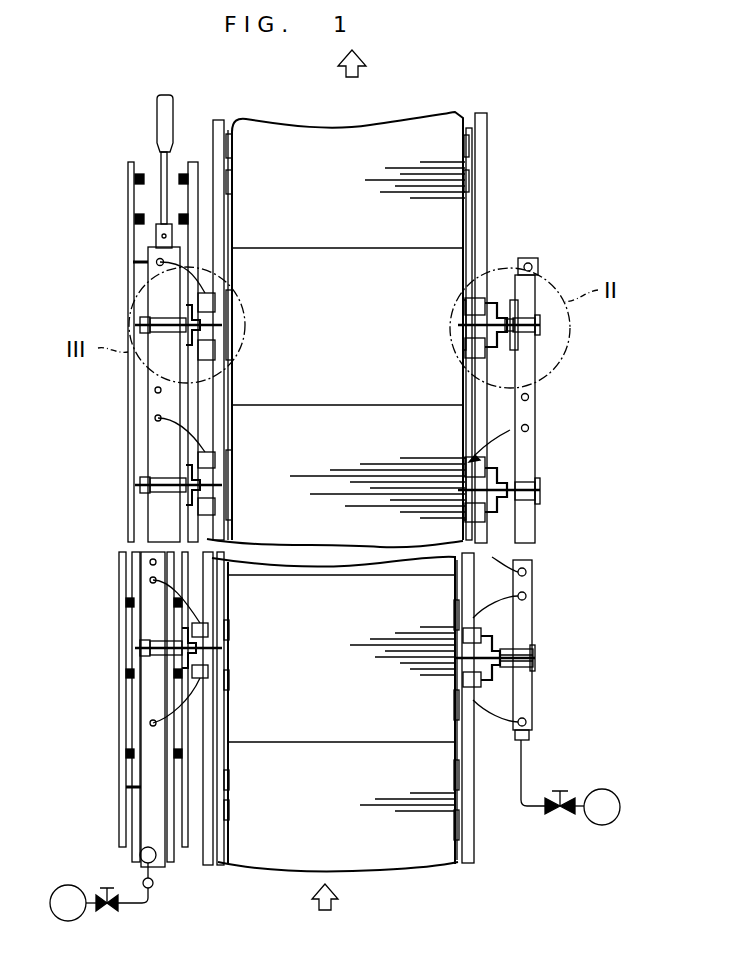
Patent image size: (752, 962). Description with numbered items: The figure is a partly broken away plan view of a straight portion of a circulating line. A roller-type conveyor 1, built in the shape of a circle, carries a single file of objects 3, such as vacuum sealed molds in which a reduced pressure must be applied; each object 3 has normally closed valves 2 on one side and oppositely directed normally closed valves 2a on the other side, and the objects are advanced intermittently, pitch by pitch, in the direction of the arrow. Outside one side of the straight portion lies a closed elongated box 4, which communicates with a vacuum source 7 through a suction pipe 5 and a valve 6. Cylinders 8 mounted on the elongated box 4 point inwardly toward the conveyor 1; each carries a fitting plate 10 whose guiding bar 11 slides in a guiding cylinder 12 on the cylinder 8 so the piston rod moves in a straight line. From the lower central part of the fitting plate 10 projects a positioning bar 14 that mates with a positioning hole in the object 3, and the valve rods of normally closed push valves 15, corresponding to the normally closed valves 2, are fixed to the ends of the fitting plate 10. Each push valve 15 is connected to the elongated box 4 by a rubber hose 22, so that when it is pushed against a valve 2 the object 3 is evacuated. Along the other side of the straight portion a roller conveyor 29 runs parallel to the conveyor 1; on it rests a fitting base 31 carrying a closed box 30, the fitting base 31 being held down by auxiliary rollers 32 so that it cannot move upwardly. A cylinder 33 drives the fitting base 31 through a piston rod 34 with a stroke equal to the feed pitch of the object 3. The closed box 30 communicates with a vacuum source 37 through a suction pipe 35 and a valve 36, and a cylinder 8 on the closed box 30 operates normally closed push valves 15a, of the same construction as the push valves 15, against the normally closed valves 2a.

The roller-type conveyor 1 is at (487, 254).
The normally closed valve 2 is at (470, 197).
The normally closed valve 2a is at (214, 312).
The object 3 is at (452, 237).
The elongated box 4 is at (532, 365).
The suction pipe 5 is at (521, 762).
The valve 6 is at (556, 814).
The vacuum source 7 is at (598, 826).
The cylinder 8 is at (552, 322).
The fitting plate 10 is at (532, 340).
The guiding bar 11 is at (528, 305).
The guiding cylinder 12 is at (520, 300).
The positioning bar 14 is at (478, 328).
The normally closed push valve 15 is at (470, 300).
The normally closed push valve 15a is at (210, 293).
The rubber hose 22 is at (500, 265).
The roller conveyor 29 is at (128, 208).
The closed box 30 is at (155, 435).
The fitting base 31 is at (140, 392).
The auxiliary roller 32 is at (133, 262).
The cylinder 33 is at (160, 124).
The piston rod 34 is at (162, 165).
The suction pipe 35 is at (142, 878).
The valve 36 is at (111, 911).
The vacuum source 37 is at (68, 921).